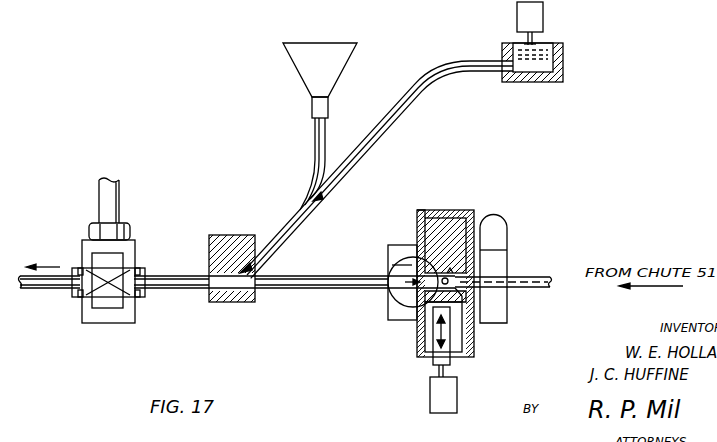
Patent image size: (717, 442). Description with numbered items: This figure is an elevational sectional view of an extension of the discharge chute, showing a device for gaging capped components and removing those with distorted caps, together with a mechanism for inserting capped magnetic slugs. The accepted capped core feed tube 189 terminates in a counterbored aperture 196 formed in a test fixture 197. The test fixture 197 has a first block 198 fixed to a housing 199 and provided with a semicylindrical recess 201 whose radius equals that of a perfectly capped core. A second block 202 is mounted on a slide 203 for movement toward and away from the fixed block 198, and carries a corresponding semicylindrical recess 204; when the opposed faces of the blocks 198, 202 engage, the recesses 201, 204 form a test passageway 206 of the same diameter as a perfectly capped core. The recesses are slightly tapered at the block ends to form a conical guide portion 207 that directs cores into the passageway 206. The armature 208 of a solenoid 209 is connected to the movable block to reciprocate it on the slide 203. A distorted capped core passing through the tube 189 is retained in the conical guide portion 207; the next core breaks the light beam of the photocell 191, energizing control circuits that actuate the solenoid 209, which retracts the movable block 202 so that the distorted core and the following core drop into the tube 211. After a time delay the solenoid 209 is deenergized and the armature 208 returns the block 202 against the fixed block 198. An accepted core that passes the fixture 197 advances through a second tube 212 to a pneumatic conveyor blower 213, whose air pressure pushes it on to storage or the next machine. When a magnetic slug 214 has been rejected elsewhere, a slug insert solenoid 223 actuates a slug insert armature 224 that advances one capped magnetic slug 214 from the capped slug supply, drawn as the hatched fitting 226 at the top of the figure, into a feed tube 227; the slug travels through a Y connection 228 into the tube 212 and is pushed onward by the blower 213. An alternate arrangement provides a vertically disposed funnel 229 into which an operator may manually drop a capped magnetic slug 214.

The accepted capped core feed tube 189 is at (531, 276).
The photocell 191 is at (505, 242).
The counterbored aperture 196 is at (402, 273).
The test fixture 197 is at (462, 209).
The first block 198 is at (426, 233).
The housing 199 is at (420, 211).
The semicylindrical recess 201 is at (442, 287).
The second block 202 is at (458, 289).
The slide 203 is at (447, 296).
The semicylindrical recess 204 is at (457, 292).
The test bore or passageway 206 is at (405, 283).
The conical guide portion 207 is at (449, 268).
The armature 208 is at (435, 372).
The solenoid 209 is at (430, 402).
The tube 211 is at (404, 264).
The second tube 212 is at (160, 275).
The pneumatic conveyor blower 213 is at (82, 320).
The magnetic slug 214 is at (522, 44).
The slug insert solenoid 223 is at (545, 12).
The slug insert armature 224 is at (540, 37).
The fitting 226 is at (565, 57).
The feed tube 227 is at (402, 100).
The Y connection 228 is at (323, 199).
The funnel 229 is at (297, 58).